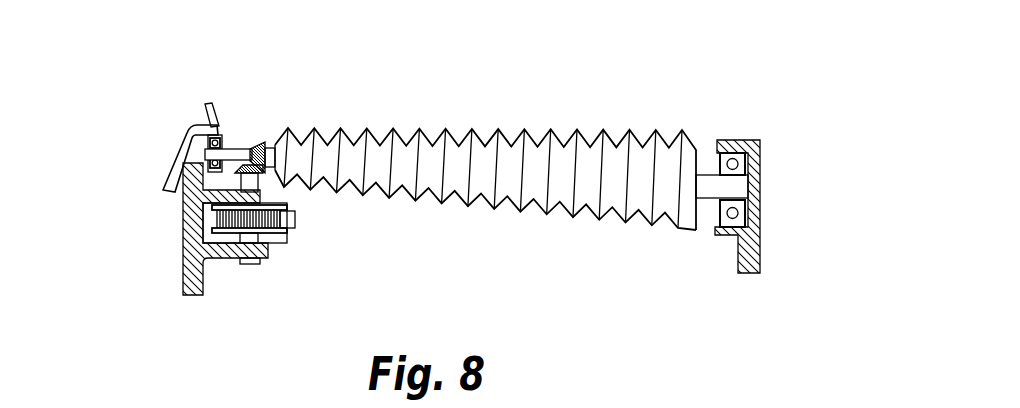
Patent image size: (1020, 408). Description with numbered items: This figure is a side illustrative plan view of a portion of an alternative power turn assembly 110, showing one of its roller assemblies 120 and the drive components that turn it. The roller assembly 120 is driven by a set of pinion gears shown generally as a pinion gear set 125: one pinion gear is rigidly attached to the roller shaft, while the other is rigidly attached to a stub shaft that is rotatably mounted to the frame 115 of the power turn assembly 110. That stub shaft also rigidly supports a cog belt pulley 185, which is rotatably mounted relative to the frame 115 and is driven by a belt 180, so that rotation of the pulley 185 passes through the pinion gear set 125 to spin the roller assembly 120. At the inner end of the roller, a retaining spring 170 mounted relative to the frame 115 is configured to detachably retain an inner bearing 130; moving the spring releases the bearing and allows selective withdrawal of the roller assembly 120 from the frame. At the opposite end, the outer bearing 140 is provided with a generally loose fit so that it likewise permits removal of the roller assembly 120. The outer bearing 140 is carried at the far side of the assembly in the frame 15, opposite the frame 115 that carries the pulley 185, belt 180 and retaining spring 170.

The power turn assembly 110 is at (557, 37).
The roller assembly 120 is at (718, 88).
The pinion gear set 125 is at (272, 170).
The inner bearing 130 is at (221, 140).
The outer bearing 140 is at (717, 212).
The retaining spring 170 is at (181, 148).
The frame 115 is at (183, 238).
The frame 15 is at (760, 202).
The belt 180 is at (295, 215).
The cog belt pulley 185 is at (270, 235).